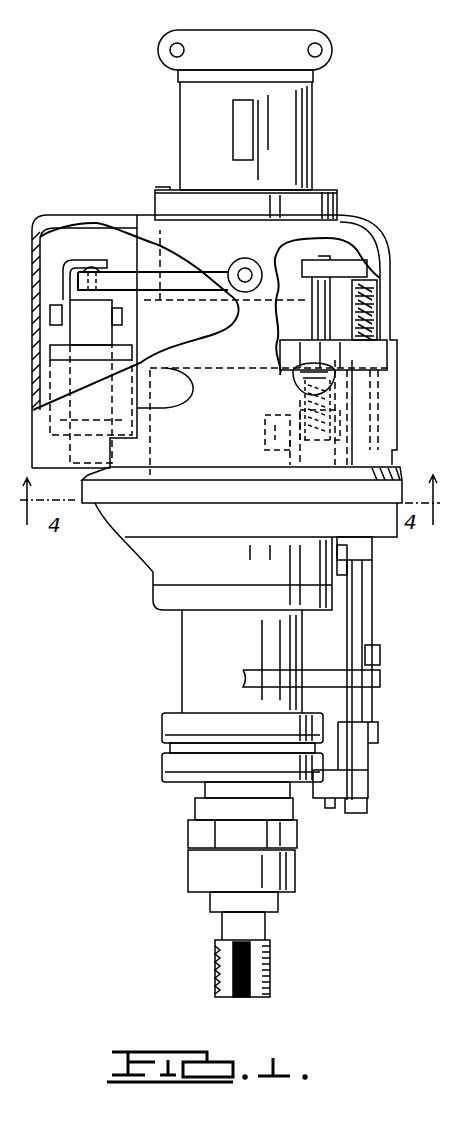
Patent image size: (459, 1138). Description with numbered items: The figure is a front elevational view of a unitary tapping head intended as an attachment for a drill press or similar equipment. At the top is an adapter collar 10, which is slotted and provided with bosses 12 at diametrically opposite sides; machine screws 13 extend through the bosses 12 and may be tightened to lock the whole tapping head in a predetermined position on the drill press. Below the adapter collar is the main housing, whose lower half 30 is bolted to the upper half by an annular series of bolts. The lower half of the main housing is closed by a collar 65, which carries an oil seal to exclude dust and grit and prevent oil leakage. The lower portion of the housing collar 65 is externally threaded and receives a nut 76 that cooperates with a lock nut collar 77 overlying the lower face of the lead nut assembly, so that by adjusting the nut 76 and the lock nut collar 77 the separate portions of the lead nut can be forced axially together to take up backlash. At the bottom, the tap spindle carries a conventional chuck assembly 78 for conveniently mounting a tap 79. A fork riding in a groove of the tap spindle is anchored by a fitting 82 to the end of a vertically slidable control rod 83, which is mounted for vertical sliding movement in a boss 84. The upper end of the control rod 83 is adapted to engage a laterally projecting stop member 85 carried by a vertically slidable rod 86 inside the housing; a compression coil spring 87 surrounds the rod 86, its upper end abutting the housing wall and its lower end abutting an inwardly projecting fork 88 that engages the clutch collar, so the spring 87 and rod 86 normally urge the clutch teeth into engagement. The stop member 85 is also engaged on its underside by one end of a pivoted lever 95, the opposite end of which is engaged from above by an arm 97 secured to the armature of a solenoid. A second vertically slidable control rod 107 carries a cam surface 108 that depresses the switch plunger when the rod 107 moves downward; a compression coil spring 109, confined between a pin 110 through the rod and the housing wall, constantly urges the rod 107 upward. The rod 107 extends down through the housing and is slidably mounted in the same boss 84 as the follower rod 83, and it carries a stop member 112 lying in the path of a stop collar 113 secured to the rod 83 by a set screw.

The adapter collar 10 is at (300, 138).
The bosses 12 is at (160, 47).
The machine screws 13 is at (172, 55).
The lower half of the main housing 30 is at (165, 563).
The collar 65 is at (195, 653).
The nut 76 is at (165, 726).
The lock nut collar 77 is at (165, 771).
The chuck assembly 78 is at (292, 872).
The tap 79 is at (272, 976).
The fitting 82 is at (378, 778).
The control rod 83 is at (360, 276).
The boss 84 is at (380, 686).
The stop member 85 is at (352, 262).
The rod 86 is at (322, 326).
The compression coil spring 87 is at (372, 390).
The fork 88 is at (270, 445).
The lever 95 is at (153, 290).
The arm 97 is at (88, 262).
The control rod 107 is at (385, 440).
The cam surface 108 is at (370, 400).
The compression coil spring 109 is at (370, 310).
The pin 110 is at (365, 296).
The stop member 112 is at (382, 658).
The stop collar 113 is at (372, 553).